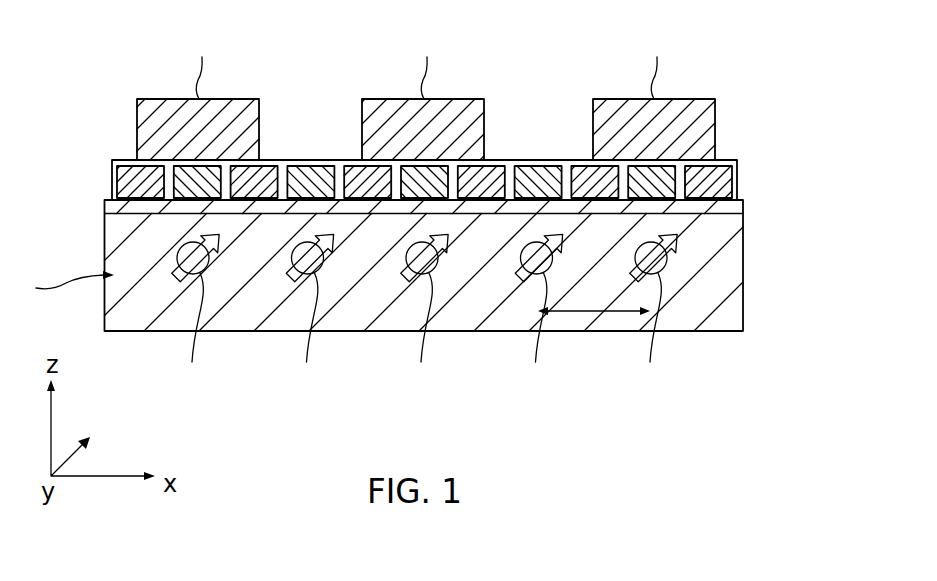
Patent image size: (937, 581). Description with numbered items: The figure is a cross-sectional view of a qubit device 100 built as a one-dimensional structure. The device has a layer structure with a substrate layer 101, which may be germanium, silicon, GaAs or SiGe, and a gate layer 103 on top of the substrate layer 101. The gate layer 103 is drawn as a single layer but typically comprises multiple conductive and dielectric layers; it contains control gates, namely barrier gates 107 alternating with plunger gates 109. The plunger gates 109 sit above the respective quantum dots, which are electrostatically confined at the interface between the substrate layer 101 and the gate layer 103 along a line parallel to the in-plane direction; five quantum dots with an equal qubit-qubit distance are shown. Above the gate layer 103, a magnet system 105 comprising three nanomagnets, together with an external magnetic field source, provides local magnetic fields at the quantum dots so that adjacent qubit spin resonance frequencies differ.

The qubit device 100 is at (764, 46).
The substrate layer 101 is at (747, 215).
The gate layer 103 is at (743, 160).
The magnet system 105 is at (727, 97).
The barrier gates 107 is at (120, 178).
The plunger gates 109 is at (185, 200).